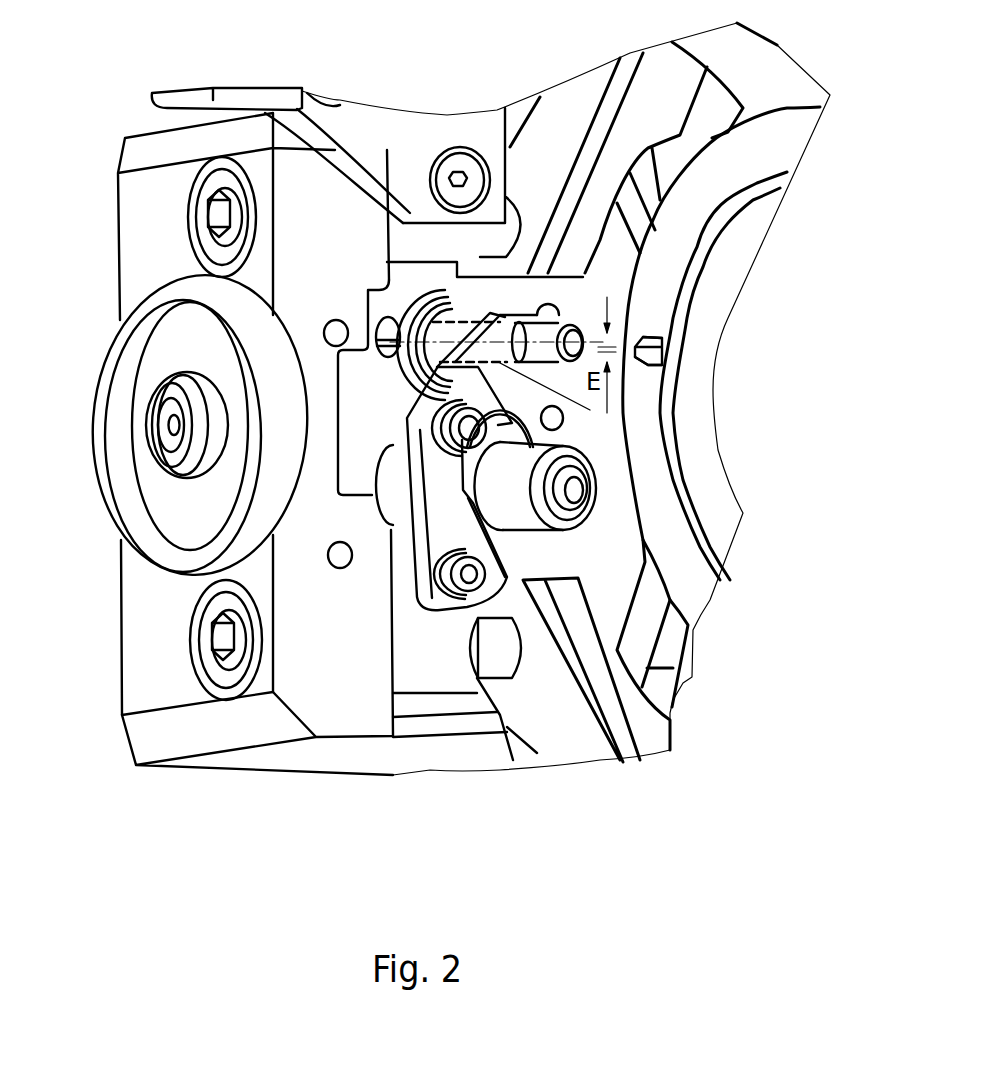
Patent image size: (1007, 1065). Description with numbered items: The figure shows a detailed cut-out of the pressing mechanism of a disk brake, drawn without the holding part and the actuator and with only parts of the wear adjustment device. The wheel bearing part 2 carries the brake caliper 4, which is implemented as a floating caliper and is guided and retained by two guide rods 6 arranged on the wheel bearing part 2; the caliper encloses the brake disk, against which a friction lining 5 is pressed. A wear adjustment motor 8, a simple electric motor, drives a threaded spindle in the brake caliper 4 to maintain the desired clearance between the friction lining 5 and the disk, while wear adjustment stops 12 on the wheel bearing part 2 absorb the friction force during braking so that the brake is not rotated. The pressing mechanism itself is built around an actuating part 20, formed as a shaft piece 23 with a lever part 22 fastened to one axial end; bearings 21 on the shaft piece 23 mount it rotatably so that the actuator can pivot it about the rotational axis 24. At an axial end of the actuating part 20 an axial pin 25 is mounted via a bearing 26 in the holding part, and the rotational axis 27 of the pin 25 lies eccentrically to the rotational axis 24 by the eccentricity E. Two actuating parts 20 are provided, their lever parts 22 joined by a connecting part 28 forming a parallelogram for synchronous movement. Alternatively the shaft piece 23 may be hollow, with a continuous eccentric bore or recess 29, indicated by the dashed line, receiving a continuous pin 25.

The wheel bearing part 2 is at (687, 145).
The brake caliper 4 is at (332, 703).
The friction lining 5 is at (620, 247).
The guide rod 6 is at (503, 642).
The wear adjustment motor 8 is at (130, 502).
The wear adjustment stop 12 is at (562, 718).
The actuating part 20 is at (490, 313).
The bearing 21 is at (405, 300).
The lever part 22 is at (500, 425).
The shaft piece 23 is at (463, 293).
The rotational axis 24 is at (604, 352).
The axial pin 25 is at (390, 330).
The bearing 26 is at (390, 492).
The rotational axis 27 is at (640, 350).
The connecting part 28 is at (432, 503).
The recess 29 is at (487, 443).